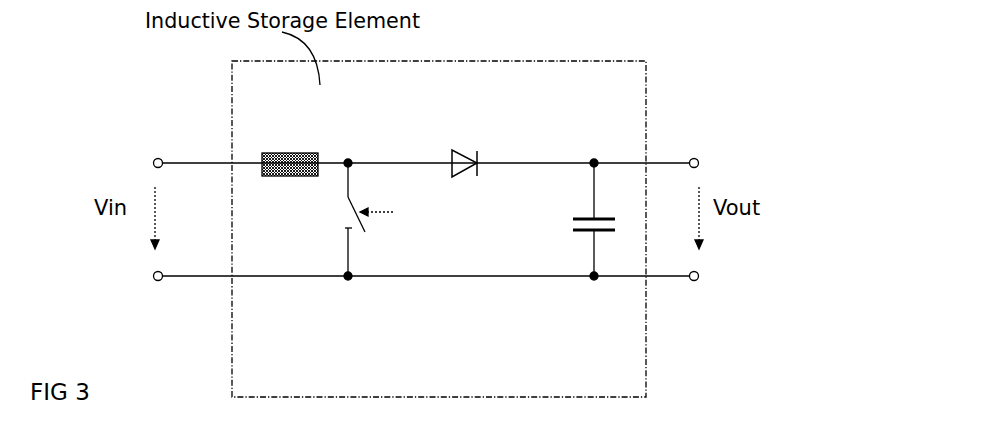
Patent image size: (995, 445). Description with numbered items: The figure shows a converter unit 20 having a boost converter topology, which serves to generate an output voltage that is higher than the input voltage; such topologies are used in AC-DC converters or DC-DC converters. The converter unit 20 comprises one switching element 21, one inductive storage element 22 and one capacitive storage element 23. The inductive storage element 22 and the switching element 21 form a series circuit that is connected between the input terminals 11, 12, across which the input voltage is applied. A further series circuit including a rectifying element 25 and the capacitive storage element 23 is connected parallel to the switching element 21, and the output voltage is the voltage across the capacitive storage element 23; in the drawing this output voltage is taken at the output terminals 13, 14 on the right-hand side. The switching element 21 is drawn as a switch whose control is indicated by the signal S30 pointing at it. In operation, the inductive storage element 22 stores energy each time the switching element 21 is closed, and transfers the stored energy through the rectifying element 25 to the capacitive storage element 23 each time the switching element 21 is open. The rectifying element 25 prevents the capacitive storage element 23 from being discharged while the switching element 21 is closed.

The input terminal 11 is at (153, 158).
The input terminal 12 is at (153, 282).
The first output terminal 13 is at (698, 158).
The second output terminal 14 is at (698, 281).
The converter unit 20 is at (568, 60).
The switching element 21 is at (337, 217).
The inductive storage element 22 is at (290, 152).
The capacitive storage element 23 is at (586, 214).
The rectifying element 25 is at (468, 148).
The switch control signal S30 is at (390, 197).